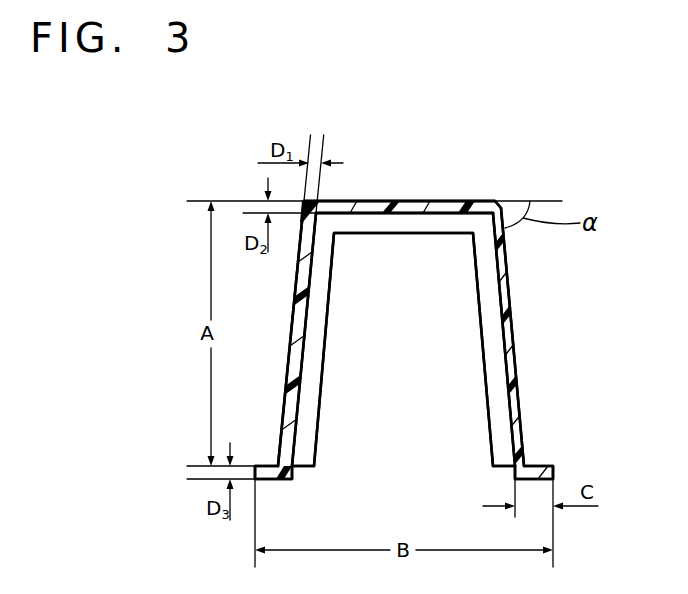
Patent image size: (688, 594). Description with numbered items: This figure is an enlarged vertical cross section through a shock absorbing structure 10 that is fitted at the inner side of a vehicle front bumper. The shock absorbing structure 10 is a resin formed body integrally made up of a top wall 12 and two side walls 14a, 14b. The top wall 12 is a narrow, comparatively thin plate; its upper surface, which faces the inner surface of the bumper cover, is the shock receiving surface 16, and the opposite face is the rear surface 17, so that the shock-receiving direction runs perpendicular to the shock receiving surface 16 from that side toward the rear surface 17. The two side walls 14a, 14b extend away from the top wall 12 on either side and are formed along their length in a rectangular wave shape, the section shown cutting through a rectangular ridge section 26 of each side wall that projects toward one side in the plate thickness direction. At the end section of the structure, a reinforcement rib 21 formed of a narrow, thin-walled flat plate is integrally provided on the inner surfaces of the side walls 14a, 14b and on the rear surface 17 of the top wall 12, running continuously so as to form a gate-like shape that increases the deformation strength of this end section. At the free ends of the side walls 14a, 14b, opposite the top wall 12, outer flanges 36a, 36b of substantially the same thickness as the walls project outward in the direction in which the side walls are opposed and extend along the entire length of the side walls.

The shock absorbing structure 10 is at (523, 151).
The top wall 12 is at (409, 192).
The shock receiving surface 16 is at (444, 201).
The rear surface 17 is at (372, 213).
The side wall 14a is at (279, 376).
The side wall 14b is at (529, 340).
The ridge section 26 is at (293, 315).
The reinforcement rib 21 is at (493, 388).
The outer flange 36a is at (268, 471).
The outer flange 36b is at (537, 472).